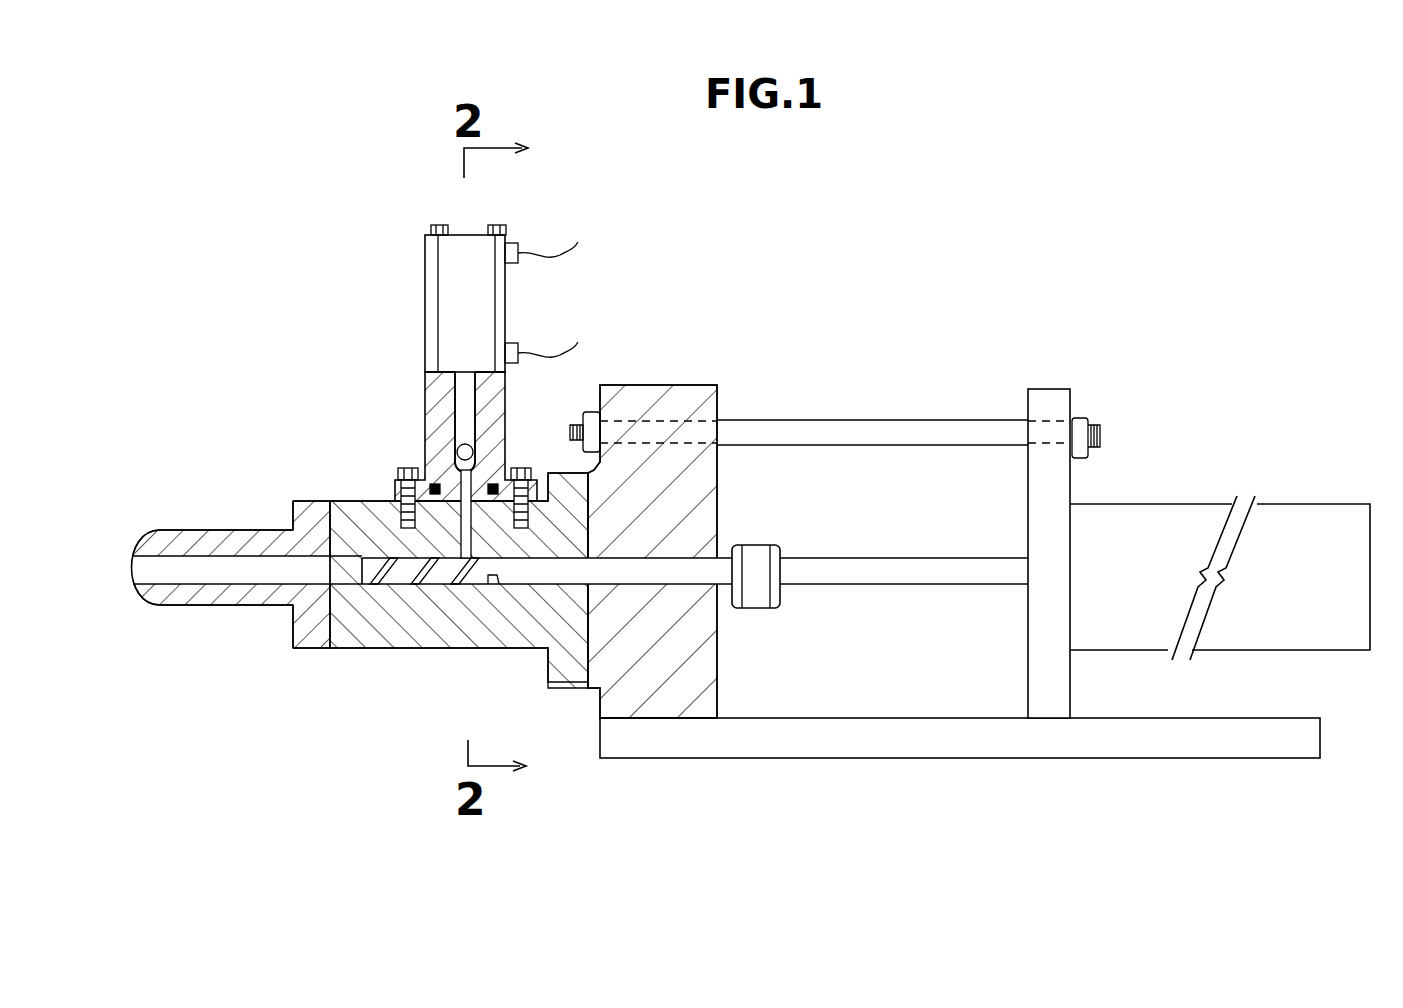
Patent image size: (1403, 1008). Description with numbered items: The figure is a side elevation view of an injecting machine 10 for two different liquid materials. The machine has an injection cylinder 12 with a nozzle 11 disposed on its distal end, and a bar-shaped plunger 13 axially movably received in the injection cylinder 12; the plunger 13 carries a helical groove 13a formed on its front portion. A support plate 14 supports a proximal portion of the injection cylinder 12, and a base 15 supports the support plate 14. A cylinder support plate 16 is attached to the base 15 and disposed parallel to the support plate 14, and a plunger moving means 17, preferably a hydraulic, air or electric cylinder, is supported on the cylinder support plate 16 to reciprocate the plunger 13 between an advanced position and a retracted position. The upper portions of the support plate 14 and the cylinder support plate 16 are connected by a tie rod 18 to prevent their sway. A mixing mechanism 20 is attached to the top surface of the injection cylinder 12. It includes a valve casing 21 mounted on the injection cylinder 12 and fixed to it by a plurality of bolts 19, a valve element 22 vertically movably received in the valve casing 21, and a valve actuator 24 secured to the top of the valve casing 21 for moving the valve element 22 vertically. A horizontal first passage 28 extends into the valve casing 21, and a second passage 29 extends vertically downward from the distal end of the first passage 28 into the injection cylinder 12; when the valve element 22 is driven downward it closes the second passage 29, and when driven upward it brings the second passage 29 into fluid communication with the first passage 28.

The injecting machine 10 is at (292, 272).
The nozzle 11 is at (218, 603).
The injection cylinder 12 is at (440, 650).
The plunger 13 is at (695, 693).
The helical groove 13a is at (385, 583).
The support plate 14 is at (665, 395).
The base 15 is at (835, 740).
The cylinder support plate 16 is at (1047, 392).
The plunger moving means 17 is at (1175, 518).
The tie rod 18 is at (850, 430).
The bolts 19 is at (408, 468).
The mixing mechanism 20 is at (545, 218).
The valve casing 21 is at (437, 395).
The valve element 22 is at (450, 418).
The valve actuator 24 is at (432, 305).
The first passage 28 is at (455, 455).
The second passage 29 is at (472, 530).